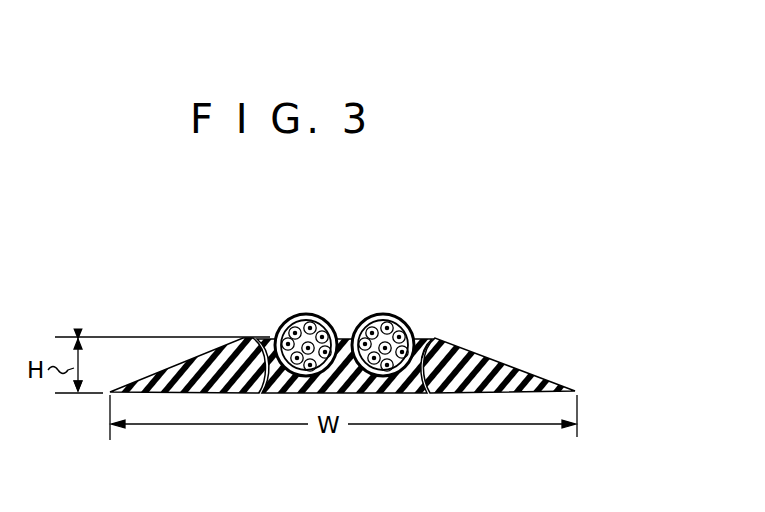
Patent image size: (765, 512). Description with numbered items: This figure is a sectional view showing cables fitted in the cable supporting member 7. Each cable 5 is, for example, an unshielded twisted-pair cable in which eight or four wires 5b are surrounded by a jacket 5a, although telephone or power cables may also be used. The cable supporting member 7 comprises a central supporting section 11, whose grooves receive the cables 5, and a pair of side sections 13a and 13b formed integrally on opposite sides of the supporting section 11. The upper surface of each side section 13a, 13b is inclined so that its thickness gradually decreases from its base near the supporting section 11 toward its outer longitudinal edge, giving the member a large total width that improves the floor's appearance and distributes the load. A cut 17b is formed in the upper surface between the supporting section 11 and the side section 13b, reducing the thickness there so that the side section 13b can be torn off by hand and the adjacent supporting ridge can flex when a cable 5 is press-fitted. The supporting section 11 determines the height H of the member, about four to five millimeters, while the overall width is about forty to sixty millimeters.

The cable supporting member 7 is at (550, 246).
The supporting section 11 is at (263, 433).
The side section 13a is at (190, 363).
The side section 13b is at (500, 365).
The cut 17b is at (433, 336).
The cable 5 is at (376, 313).
The jacket 5a is at (296, 313).
The wire 5b is at (266, 347).